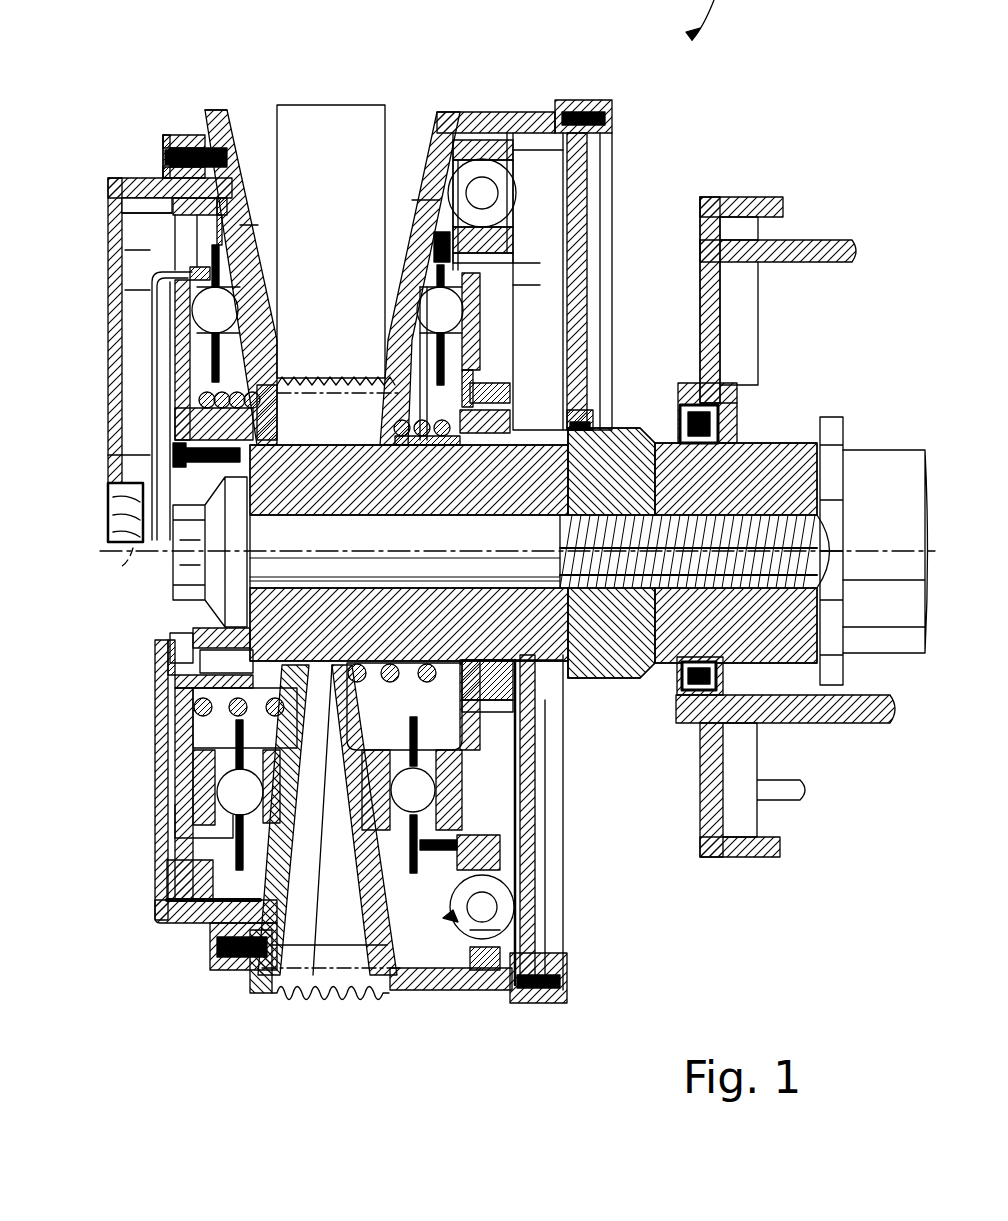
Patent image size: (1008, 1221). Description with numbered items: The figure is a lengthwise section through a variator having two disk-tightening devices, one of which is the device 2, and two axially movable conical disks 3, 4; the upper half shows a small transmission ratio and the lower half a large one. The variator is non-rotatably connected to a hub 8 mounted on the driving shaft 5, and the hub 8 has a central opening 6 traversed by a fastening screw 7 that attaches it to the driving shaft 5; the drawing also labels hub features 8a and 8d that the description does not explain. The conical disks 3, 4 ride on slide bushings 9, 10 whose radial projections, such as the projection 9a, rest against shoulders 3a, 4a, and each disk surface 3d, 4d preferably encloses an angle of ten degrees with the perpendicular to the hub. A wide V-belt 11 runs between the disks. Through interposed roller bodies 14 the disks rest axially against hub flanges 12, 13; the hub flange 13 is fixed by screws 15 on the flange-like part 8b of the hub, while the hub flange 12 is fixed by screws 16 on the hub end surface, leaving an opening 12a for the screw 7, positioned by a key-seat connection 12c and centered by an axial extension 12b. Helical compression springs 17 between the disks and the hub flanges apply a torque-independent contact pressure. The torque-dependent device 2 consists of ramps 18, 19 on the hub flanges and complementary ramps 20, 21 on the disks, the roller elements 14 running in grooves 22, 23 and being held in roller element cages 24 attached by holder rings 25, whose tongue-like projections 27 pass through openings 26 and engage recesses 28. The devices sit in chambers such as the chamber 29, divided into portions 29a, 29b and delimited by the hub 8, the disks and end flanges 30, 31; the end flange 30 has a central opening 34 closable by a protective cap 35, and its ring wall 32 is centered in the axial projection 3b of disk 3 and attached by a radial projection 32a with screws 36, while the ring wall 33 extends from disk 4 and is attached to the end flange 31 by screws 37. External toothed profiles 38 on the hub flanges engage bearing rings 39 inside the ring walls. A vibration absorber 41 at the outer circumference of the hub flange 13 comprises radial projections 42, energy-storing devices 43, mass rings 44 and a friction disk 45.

The disk-tightening device 2 is at (147, 338).
The conical disk 3 is at (238, 240).
The shoulder 3a is at (265, 388).
The axial projection 3b is at (247, 150).
The conical disk surface 3d is at (250, 226).
The conical disk 4 is at (424, 165).
The shoulder 4a is at (385, 448).
The conical disk surface 4d is at (412, 200).
The driving shaft 5 is at (768, 487).
The central opening 6 is at (530, 553).
The fastening screw 7 is at (205, 590).
The hub 8 is at (412, 488).
The shaft end 8a is at (703, 437).
The flange-like part 8b is at (515, 380).
The shaft axis 8d is at (118, 568).
The slide bushing 9 is at (267, 443).
The radial projection 9a is at (200, 403).
The slide bushing 10 is at (410, 440).
The V-belt 11 is at (292, 995).
The hub flange 12 is at (185, 708).
The opening 12a is at (200, 625).
The axial extension 12b is at (215, 688).
The key-seat connection 12c is at (217, 663).
The hub flange 13 is at (522, 762).
The roller body 14 is at (228, 787).
The screw 15 is at (510, 394).
The screw 16 is at (183, 440).
The helical compression spring 17 is at (200, 725).
The ramp 18 is at (190, 770).
The ramp 19 is at (475, 787).
The ramp 20 is at (313, 975).
The ramp 21 is at (370, 975).
The groove 22 is at (200, 308).
The groove 23 is at (235, 298).
The roller element cage 24 is at (258, 915).
The holder ring 25 is at (228, 862).
The opening 26 is at (180, 252).
The tongue-like projection 27 is at (162, 835).
The recess 28 is at (178, 820).
The chamber 29 is at (148, 222).
The chamber portion 29a is at (132, 192).
The chamber portion 29b is at (222, 202).
The end flange 30 is at (108, 383).
The end flange 31 is at (575, 270).
The ring wall 32 is at (170, 185).
The radial projection 32a is at (165, 133).
The ring wall 33 is at (505, 118).
The central opening 34 is at (122, 520).
The protective cap 35 is at (118, 478).
The screw 36 is at (205, 148).
The screw 37 is at (600, 105).
The external toothed profile 38 is at (178, 198).
The bearing ring 39 is at (225, 210).
The vibration absorber 41 is at (448, 918).
The radial projection 42 is at (508, 913).
The energy-storing device 43 is at (495, 935).
The mass ring 44 is at (467, 937).
The friction disk 45 is at (523, 190).